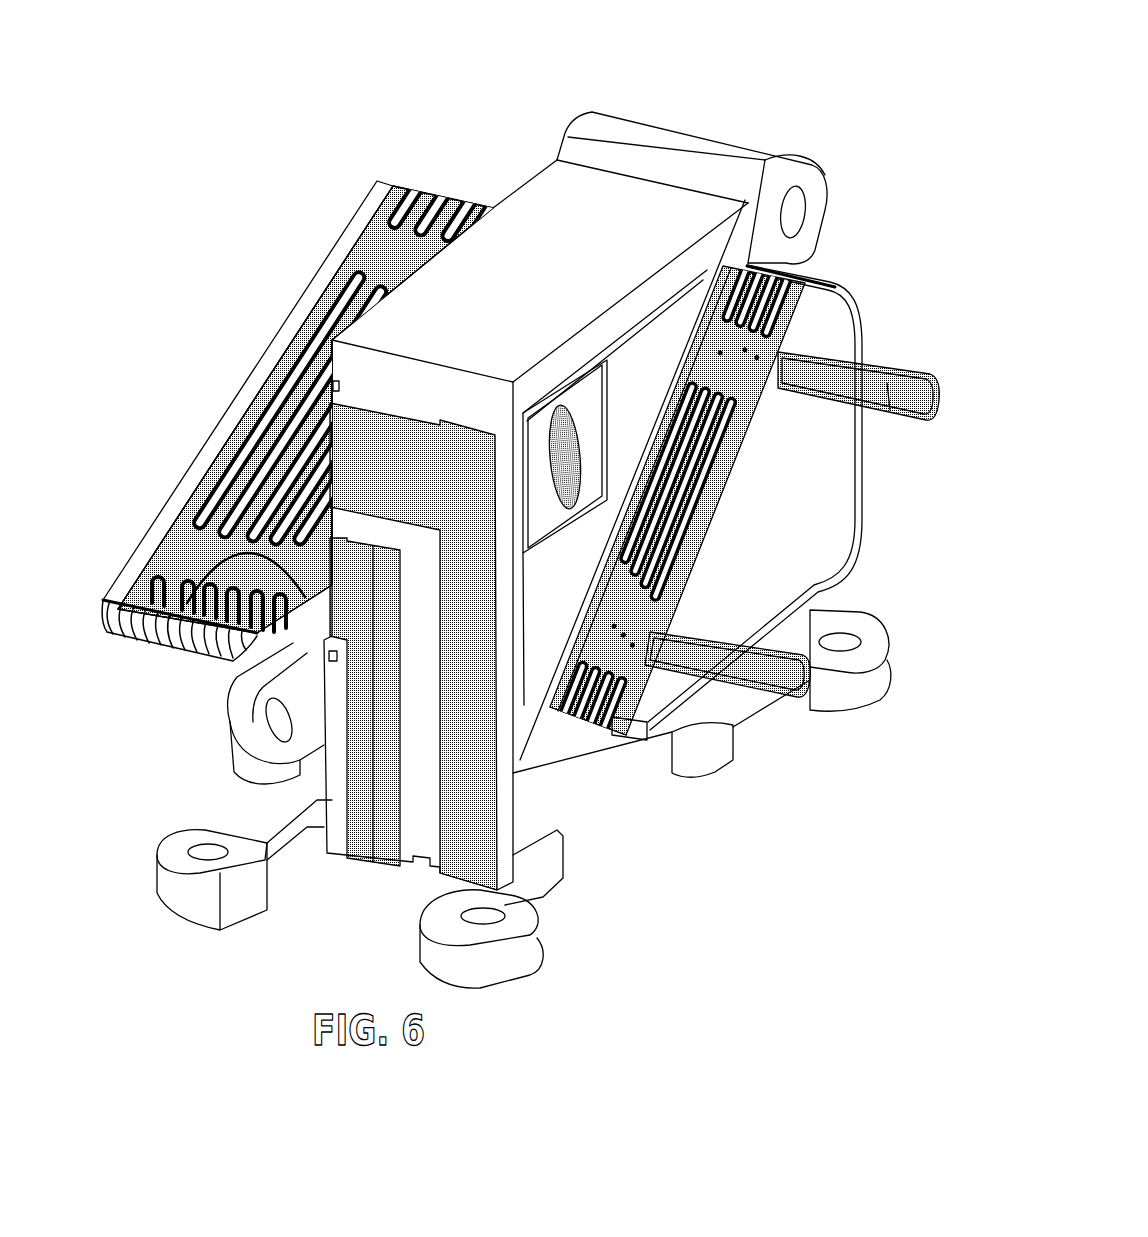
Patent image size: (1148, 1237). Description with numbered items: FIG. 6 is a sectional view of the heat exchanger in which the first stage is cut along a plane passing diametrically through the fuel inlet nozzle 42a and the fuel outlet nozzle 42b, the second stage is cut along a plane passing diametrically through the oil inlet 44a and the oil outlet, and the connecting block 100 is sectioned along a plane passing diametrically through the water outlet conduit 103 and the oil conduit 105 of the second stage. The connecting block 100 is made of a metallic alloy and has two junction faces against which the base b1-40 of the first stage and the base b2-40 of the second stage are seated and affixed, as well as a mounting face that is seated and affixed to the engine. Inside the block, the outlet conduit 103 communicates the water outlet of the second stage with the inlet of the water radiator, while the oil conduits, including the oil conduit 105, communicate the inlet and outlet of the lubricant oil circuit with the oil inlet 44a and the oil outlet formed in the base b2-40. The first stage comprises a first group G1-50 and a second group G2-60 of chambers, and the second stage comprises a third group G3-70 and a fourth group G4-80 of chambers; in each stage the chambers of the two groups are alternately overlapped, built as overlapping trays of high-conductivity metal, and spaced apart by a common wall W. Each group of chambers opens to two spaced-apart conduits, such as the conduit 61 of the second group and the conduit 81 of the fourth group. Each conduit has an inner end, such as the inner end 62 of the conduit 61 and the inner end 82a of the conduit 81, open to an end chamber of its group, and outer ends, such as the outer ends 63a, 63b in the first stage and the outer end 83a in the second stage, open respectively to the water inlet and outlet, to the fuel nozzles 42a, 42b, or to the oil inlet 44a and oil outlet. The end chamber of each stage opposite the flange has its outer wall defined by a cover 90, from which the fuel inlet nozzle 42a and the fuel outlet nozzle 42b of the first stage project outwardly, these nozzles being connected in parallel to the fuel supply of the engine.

The connecting block 100 is at (670, 118).
The base of the first stage b1-40 is at (810, 182).
The base of the second stage b2-40 is at (303, 748).
The cover 90 is at (348, 215).
The common wall W is at (298, 336).
The conduit 81 is at (423, 257).
The inner end of conduit 82a is at (377, 248).
The third group of chambers G3-70 is at (303, 413).
The fourth group of chambers G4-80 is at (267, 487).
The outer end of conduit 83a is at (172, 617).
The oil inlet 44a is at (247, 627).
The outlet conduit 103 is at (481, 814).
The oil conduit 105 is at (350, 792).
The conduit 61 is at (745, 350).
The inner end of conduit 62 is at (720, 353).
The outer end of conduit 63a is at (777, 357).
The outer end of conduit 63b is at (633, 645).
The first group of chambers G1-50 is at (690, 440).
The second group of chambers G2-60 is at (628, 552).
The fuel inlet nozzle 42a is at (885, 415).
The fuel outlet nozzle 42b is at (745, 692).